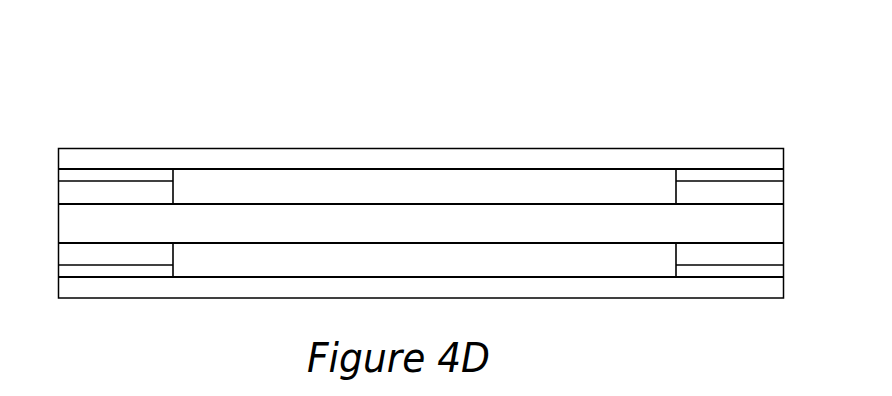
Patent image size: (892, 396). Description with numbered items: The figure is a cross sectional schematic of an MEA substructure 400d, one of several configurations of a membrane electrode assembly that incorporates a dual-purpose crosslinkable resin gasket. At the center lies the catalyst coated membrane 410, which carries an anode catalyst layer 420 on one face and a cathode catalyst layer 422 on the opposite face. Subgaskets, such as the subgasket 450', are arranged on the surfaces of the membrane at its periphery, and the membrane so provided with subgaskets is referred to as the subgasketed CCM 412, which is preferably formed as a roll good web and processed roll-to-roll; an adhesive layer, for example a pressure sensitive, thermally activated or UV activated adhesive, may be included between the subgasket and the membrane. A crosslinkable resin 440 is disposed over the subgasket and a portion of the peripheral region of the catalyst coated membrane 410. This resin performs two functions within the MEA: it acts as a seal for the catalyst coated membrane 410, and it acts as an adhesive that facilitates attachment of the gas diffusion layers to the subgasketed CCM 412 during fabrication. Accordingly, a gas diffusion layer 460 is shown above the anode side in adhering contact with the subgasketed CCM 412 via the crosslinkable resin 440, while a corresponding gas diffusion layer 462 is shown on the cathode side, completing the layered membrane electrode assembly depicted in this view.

The MEA substructure 400d is at (165, 121).
The catalyst coated membrane 410 is at (537, 215).
The subgasketed CCM 412 is at (625, 203).
The anode catalyst layer 420 is at (249, 203).
The cathode catalyst layer 422 is at (313, 242).
The crosslinkable resin 440 is at (92, 168).
The subgasket 450' is at (738, 154).
The gas diffusion layer 460 is at (422, 153).
The second cover layer 462 is at (444, 293).